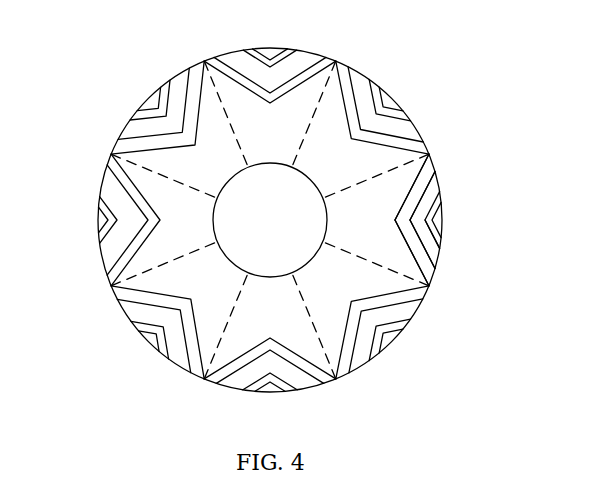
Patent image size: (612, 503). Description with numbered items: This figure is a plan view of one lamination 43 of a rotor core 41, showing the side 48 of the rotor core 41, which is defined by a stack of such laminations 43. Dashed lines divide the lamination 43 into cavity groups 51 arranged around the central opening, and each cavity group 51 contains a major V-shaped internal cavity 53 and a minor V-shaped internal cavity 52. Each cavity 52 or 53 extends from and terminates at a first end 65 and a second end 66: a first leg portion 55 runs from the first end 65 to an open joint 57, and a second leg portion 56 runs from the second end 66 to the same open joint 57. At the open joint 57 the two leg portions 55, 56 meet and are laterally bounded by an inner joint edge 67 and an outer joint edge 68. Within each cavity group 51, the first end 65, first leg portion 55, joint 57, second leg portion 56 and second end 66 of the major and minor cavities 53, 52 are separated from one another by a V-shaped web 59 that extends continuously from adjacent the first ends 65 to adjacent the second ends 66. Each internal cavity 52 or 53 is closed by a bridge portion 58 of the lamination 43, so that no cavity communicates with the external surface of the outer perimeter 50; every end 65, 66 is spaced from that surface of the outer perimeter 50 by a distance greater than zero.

The rotor core 41 is at (340, 162).
The lamination 43 is at (195, 232).
The side of rotor core 48 is at (282, 145).
The outer perimeter 50 is at (148, 348).
The cavity group 51 is at (131, 85).
The minor V-shaped internal cavity 52 is at (370, 88).
The major V-shaped internal cavity 53 is at (347, 70).
The first leg portion 55 is at (407, 190).
The second leg portion 56 is at (407, 245).
The open joint 57 is at (395, 219).
The bridge portion 58 is at (107, 167).
The V-shaped web 59 is at (410, 218).
The first end 65 is at (430, 163).
The second end 66 is at (430, 250).
The inner joint edge 67 is at (363, 311).
The outer joint edge 68 is at (352, 302).